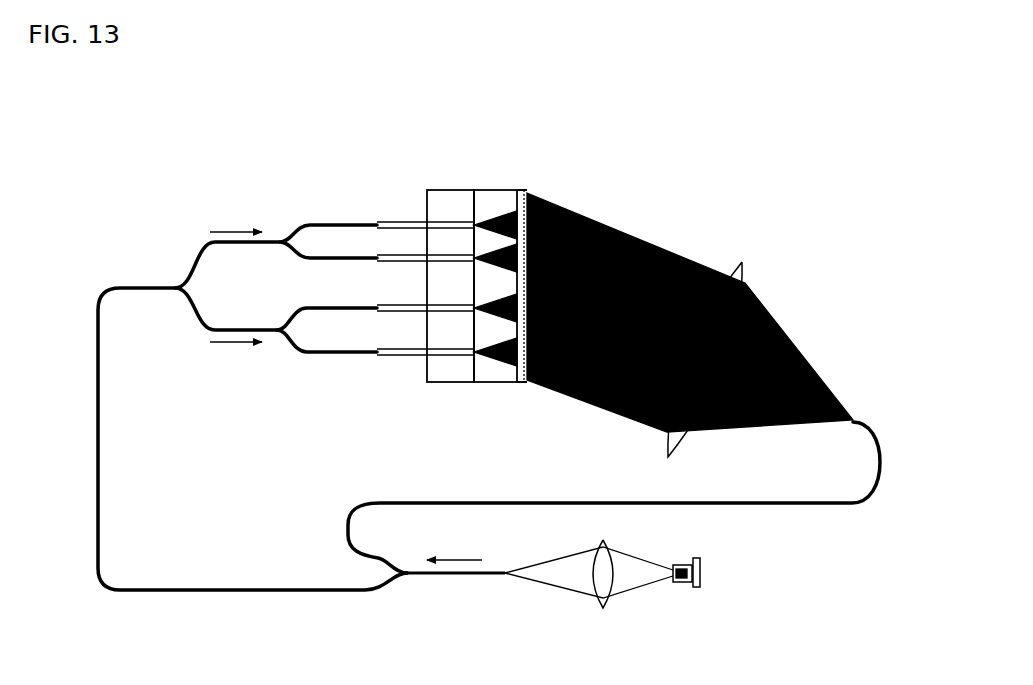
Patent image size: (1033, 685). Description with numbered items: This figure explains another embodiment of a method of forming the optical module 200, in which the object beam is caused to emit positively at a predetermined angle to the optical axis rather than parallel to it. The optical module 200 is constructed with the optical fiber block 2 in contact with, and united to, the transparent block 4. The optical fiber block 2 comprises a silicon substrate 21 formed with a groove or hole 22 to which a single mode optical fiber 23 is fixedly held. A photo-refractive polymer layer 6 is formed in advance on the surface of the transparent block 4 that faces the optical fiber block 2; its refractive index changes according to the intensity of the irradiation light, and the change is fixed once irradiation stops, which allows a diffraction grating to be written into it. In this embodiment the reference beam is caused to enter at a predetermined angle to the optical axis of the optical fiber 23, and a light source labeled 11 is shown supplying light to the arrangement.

The optical module 200 is at (432, 280).
The optical fiber block 2 is at (412, 208).
The silicon substrate 21 is at (432, 372).
The groove or hole 22 is at (462, 260).
The single mode optical fiber 23 is at (380, 222).
The transparent block 4 is at (485, 375).
The photo-refractive polymer layer 6 is at (524, 198).
The semiconductor laser 11 is at (684, 583).